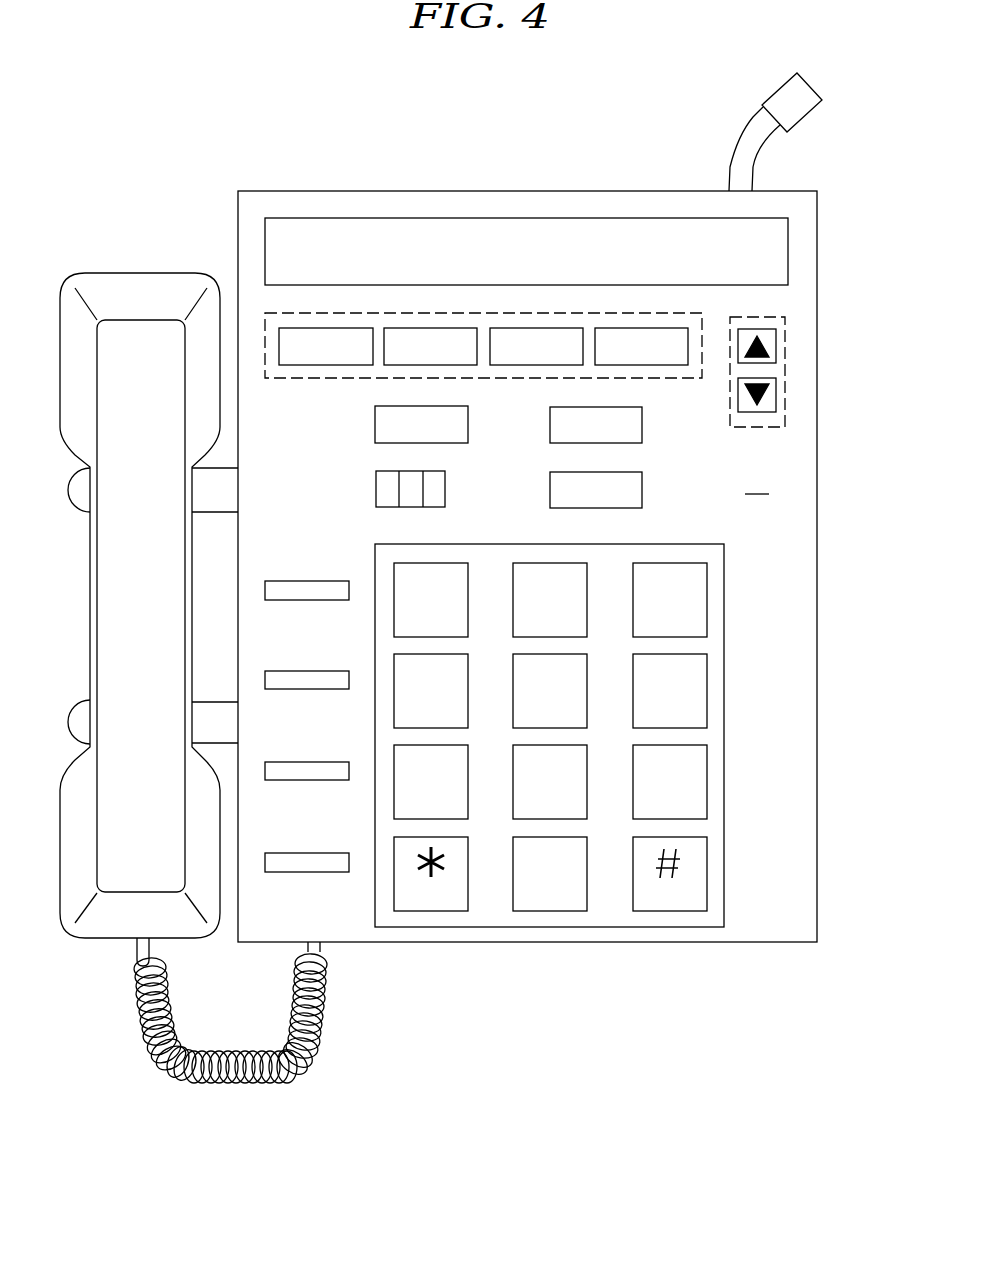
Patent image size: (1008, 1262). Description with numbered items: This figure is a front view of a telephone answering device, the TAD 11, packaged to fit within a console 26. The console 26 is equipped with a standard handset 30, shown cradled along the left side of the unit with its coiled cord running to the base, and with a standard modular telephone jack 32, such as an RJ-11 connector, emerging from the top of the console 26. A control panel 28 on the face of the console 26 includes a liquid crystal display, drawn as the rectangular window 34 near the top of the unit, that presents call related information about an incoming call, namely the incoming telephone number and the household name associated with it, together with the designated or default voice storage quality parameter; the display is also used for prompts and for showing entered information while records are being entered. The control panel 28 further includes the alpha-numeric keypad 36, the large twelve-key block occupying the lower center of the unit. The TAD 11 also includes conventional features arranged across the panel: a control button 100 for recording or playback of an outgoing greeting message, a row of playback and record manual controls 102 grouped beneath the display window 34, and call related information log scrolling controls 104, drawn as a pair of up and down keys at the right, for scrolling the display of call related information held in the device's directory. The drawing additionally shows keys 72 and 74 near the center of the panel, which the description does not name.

The TAD 11 is at (481, 578).
The console 26 is at (817, 598).
The control panel 28 is at (761, 482).
The handset 30 is at (116, 930).
The modular telephone jack 32 is at (745, 132).
The display 34 is at (457, 227).
The alpha-numeric keypad 36 is at (724, 694).
The default ring selection keys 72 is at (375, 487).
The ID ring key 74 is at (643, 490).
The control button 100 is at (643, 425).
The playback and record manual controls 102 is at (272, 312).
The call related information log scrolling controls 104 is at (786, 362).